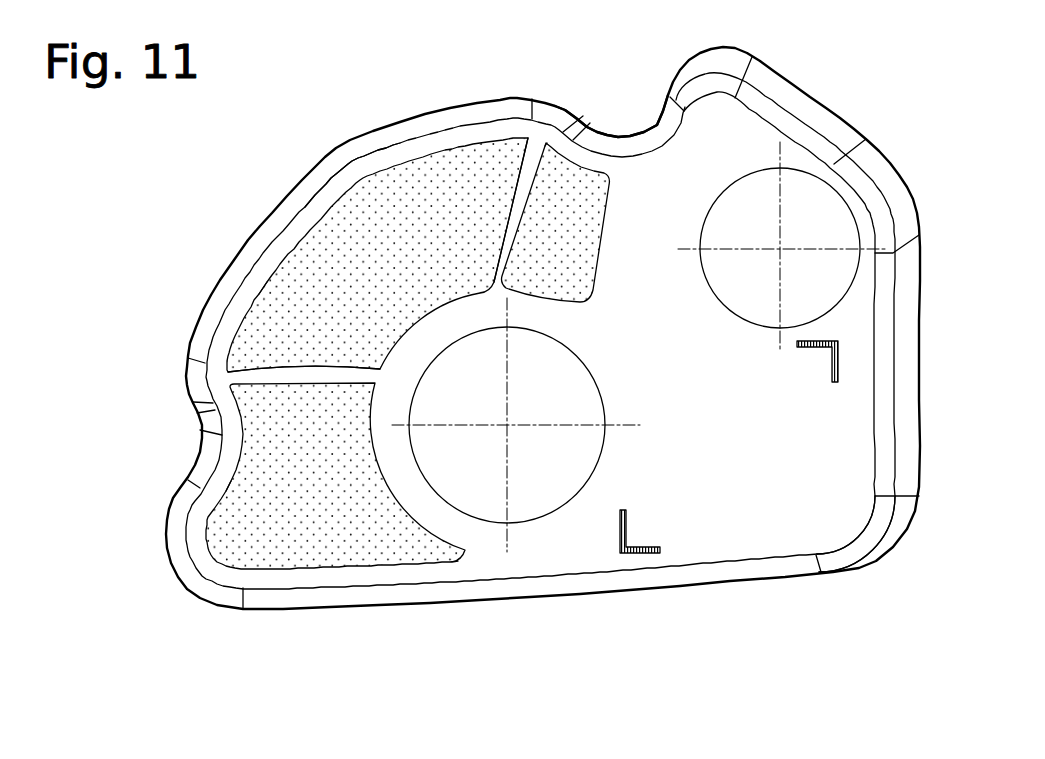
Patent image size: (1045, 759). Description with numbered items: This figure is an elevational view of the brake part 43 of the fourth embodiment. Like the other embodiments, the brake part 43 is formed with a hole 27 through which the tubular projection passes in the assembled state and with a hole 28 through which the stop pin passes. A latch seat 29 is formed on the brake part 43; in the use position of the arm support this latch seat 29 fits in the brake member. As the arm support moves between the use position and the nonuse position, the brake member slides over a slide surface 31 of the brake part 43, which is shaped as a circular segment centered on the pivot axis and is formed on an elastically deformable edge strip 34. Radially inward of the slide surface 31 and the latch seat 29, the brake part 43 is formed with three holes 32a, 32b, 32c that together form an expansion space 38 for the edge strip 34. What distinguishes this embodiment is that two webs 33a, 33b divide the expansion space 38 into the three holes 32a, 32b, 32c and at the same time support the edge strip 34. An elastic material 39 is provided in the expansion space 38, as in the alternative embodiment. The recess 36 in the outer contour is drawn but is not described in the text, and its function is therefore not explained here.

The hole 27 is at (562, 455).
The hole 28 is at (758, 280).
The latch seat 29 is at (632, 114).
The slide surface 31 is at (306, 178).
The hole 32a is at (561, 170).
The hole 32b is at (298, 264).
The hole 32c is at (302, 550).
The web 33a is at (517, 197).
The web 33b is at (300, 373).
The edge strip 34 is at (339, 164).
The recess 36 is at (598, 122).
The expansion space 38 is at (325, 242).
The elastic material 39 is at (547, 175).
The brake part 43 is at (800, 525).